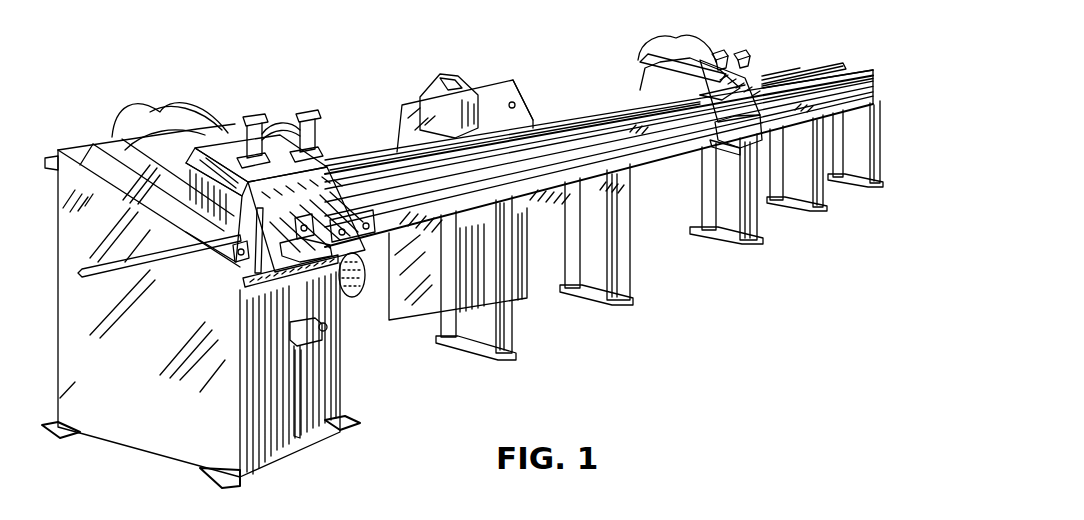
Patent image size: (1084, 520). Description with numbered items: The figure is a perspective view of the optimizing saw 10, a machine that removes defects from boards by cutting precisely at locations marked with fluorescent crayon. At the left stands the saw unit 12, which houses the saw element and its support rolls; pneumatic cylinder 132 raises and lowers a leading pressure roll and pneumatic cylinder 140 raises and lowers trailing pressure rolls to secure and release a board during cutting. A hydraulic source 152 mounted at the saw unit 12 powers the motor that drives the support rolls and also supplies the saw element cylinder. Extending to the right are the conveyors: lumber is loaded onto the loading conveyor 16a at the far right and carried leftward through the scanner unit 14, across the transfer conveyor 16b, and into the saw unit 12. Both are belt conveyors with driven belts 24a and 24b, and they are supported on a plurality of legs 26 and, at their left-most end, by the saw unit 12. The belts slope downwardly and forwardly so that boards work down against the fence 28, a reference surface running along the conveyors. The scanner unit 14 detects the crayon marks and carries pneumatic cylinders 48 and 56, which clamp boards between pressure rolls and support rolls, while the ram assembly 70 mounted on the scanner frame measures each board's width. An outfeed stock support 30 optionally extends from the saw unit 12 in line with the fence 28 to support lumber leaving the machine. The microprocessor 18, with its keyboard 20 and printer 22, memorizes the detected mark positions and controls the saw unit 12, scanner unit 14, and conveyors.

The optimizing saw 10 is at (648, 377).
The saw unit 12 is at (138, 454).
The scanner unit 14 is at (752, 62).
The loading conveyor 16a is at (855, 60).
The transfer conveyor 16b is at (657, 162).
The microprocessor 18 is at (528, 98).
The keyboard 20 is at (475, 82).
The printer 22 is at (420, 88).
The driven belt 24a is at (826, 66).
The driven belt 24b is at (590, 125).
The legs 26 is at (880, 153).
The fence 28 is at (373, 188).
The outfeed stock support 30 is at (98, 274).
The pneumatic cylinder 48 is at (745, 52).
The pneumatic cylinder 56 is at (720, 52).
The ram assembly 70 is at (633, 53).
The pneumatic cylinder 132 is at (311, 112).
The pneumatic cylinder 140 is at (253, 115).
The hydraulic source 152 is at (366, 397).